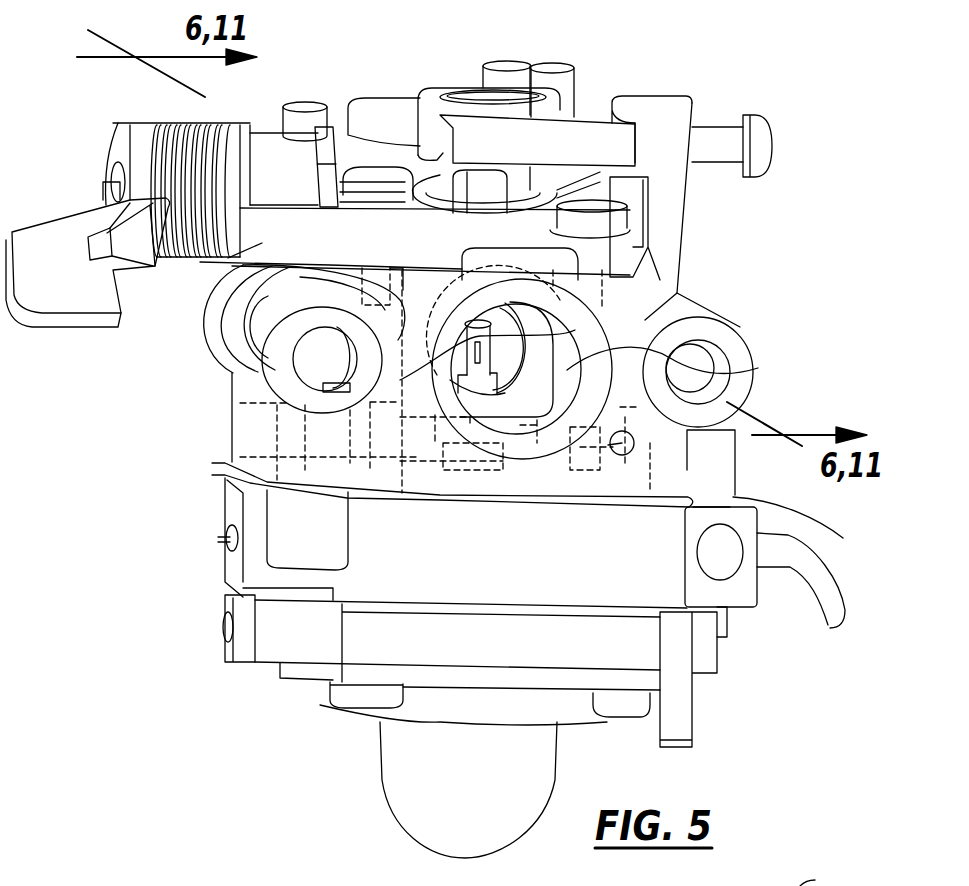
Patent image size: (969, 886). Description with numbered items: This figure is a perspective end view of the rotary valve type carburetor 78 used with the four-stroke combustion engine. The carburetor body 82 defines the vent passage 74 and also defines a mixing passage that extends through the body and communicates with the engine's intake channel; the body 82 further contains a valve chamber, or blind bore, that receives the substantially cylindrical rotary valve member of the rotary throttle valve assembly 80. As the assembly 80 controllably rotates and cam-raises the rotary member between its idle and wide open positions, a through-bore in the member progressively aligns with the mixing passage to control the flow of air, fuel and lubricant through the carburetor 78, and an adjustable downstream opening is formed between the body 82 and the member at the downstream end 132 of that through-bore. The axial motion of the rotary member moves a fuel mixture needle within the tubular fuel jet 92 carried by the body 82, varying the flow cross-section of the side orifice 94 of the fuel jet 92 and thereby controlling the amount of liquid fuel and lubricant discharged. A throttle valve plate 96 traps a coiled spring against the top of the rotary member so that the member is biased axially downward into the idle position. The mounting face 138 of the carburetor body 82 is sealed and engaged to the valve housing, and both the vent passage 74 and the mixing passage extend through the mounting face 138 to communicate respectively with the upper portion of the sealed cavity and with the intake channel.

The rotary-type carburetor 78 is at (763, 62).
The tubular fuel jet 92 is at (575, 330).
The carburetor body 82 is at (677, 293).
The downstream end 132 is at (758, 368).
The vent passage 74 is at (735, 467).
The mounting face 138 is at (792, 567).
The throttle valve plate 96 is at (203, 292).
The side orifice 94 is at (400, 380).
The rotary throttle valve assembly 80 is at (823, 880).